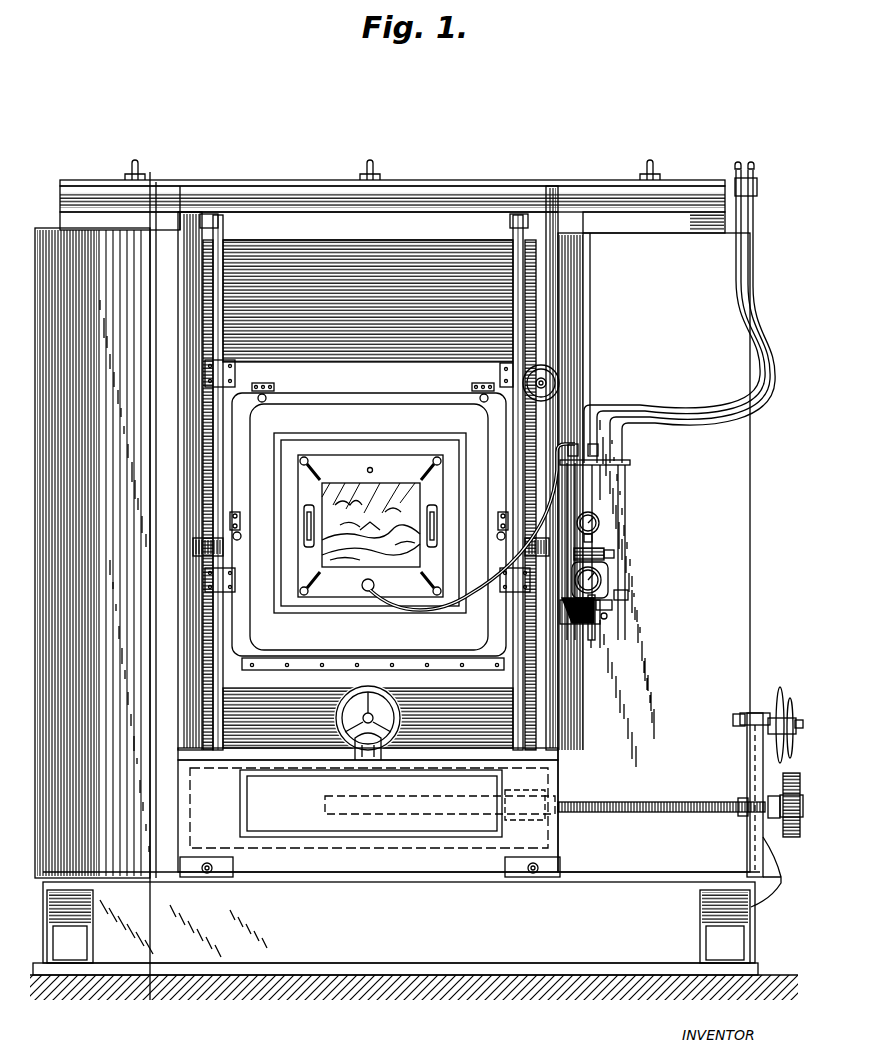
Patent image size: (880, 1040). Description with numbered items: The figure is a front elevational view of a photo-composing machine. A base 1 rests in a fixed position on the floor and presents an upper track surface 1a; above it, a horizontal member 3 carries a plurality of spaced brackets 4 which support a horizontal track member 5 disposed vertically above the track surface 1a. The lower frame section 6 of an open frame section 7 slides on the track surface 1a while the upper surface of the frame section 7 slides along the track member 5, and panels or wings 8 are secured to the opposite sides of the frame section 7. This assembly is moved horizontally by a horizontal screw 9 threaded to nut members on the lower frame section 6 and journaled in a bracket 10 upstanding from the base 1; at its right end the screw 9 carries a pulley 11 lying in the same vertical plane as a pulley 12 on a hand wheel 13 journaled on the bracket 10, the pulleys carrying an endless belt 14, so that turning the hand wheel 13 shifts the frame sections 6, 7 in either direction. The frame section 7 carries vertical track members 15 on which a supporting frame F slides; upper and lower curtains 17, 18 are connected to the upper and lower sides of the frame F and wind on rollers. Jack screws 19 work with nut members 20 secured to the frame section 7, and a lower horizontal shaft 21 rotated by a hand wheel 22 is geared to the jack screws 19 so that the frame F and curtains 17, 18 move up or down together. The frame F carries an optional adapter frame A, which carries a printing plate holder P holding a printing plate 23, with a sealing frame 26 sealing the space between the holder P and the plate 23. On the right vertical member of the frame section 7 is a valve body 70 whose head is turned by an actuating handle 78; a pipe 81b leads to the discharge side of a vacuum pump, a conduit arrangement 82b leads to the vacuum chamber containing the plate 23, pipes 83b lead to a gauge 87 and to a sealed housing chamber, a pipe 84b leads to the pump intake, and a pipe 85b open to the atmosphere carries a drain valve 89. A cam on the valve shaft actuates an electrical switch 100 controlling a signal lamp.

The base 1 is at (374, 986).
The upper track surface 1a is at (115, 872).
The horizontal member 3 is at (120, 208).
The brackets 4 is at (138, 168).
The horizontal track member 5 is at (253, 184).
The lower frame section 6 is at (752, 508).
The open frame section 7 is at (552, 296).
The panels or wings 8 is at (40, 228).
The horizontal screw 9 is at (656, 798).
The bracket 10 is at (748, 715).
The pulley 11 is at (790, 837).
The pulley 12 is at (792, 700).
The hand wheel 13 is at (779, 687).
The endless belt 14 is at (786, 767).
The vertical track members 15 is at (236, 642).
The upper curtain 17 is at (372, 258).
The lower curtain 18 is at (460, 725).
The jack screws 19 is at (208, 437).
The nut member 20 is at (193, 547).
The lower horizontal shaft 21 is at (298, 748).
The hand wheel 22 is at (370, 754).
The printing plate 23 is at (380, 482).
The sealing frame 26 is at (332, 590).
The valve body or housing 70 is at (612, 576).
The actuating handle 78 is at (591, 627).
The pipe 81b is at (606, 406).
The conduit arrangement 82b is at (440, 602).
The pipes 83b is at (590, 487).
The pipe 84b is at (606, 507).
The pipe 85b is at (628, 551).
The gauge 87 is at (600, 528).
The valve 89 is at (608, 612).
The electrical switch 100 is at (595, 610).
The adapter frame A is at (212, 773).
The printing plate holder P is at (339, 455).